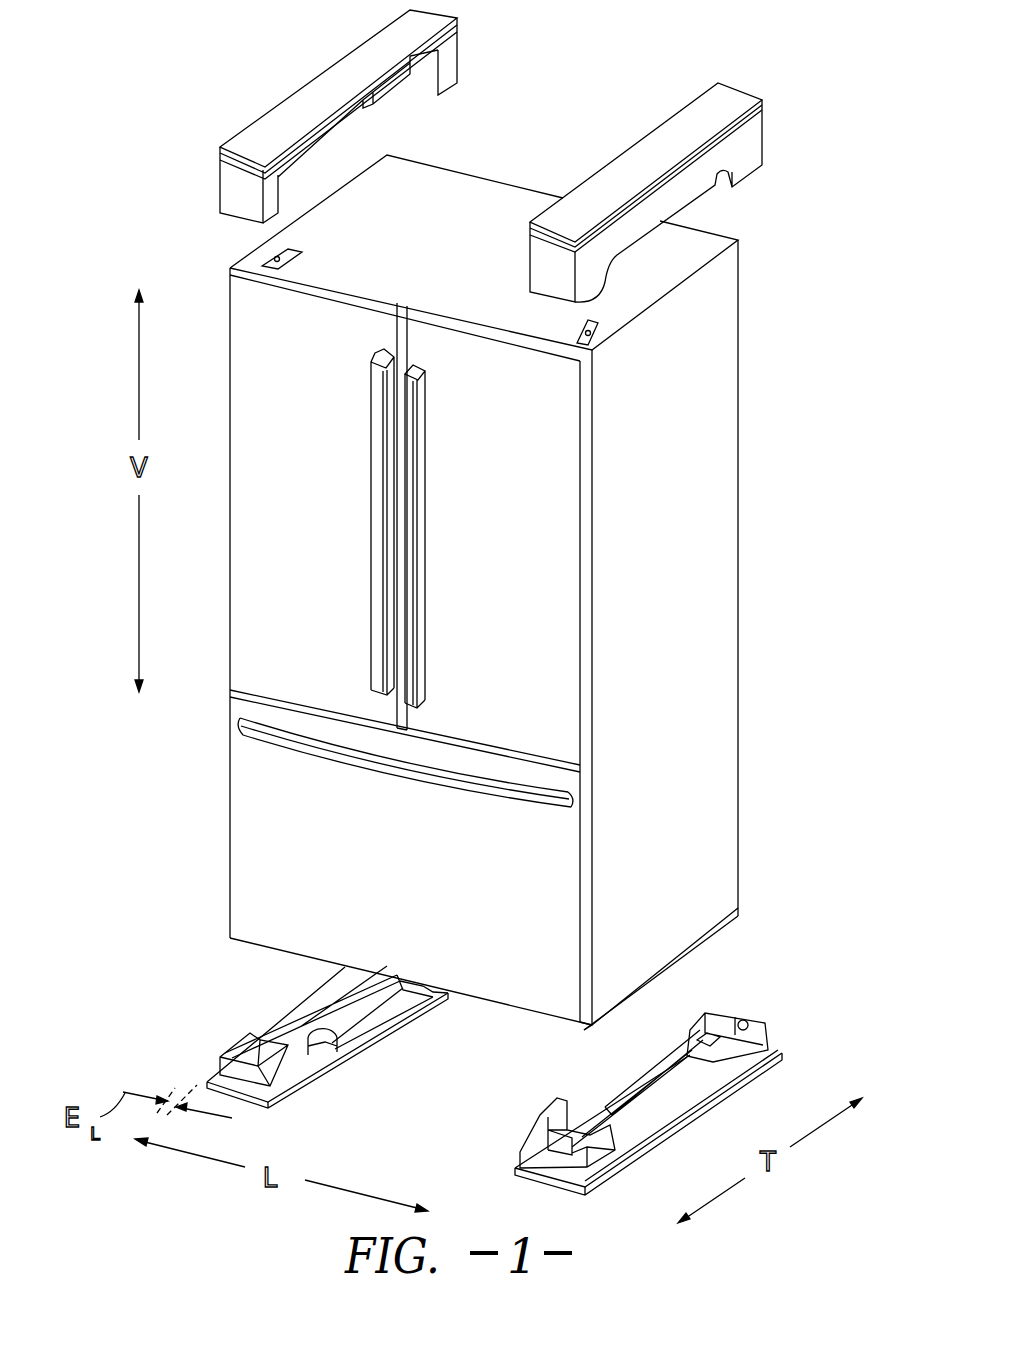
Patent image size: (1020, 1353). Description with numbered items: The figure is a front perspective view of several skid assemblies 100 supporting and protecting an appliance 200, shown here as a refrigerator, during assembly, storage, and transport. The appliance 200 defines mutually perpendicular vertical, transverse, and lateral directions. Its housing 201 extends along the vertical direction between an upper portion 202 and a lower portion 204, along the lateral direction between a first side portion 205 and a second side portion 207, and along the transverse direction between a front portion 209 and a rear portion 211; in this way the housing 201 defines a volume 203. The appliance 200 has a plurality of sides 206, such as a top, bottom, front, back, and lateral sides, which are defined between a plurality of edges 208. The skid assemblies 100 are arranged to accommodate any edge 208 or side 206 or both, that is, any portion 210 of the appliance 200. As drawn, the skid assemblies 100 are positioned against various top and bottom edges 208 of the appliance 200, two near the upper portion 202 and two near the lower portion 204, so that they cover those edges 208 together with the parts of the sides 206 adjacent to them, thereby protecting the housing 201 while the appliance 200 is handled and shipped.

The skid assembly 100 is at (280, 80).
The appliance 200 is at (795, 428).
The housing 201 is at (695, 608).
The upper portion 202 is at (200, 263).
The volume 203 is at (638, 748).
The lower portion 204 is at (210, 938).
The first side portion 205 is at (230, 950).
The side 206 is at (452, 254).
The second side portion 207 is at (572, 1034).
The edge 208 is at (328, 195).
The front portion 209 is at (598, 1028).
The portion 210 is at (670, 935).
The rear portion 211 is at (758, 931).